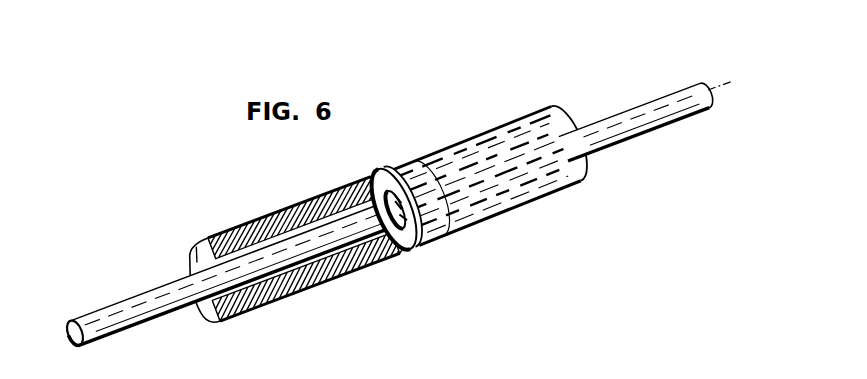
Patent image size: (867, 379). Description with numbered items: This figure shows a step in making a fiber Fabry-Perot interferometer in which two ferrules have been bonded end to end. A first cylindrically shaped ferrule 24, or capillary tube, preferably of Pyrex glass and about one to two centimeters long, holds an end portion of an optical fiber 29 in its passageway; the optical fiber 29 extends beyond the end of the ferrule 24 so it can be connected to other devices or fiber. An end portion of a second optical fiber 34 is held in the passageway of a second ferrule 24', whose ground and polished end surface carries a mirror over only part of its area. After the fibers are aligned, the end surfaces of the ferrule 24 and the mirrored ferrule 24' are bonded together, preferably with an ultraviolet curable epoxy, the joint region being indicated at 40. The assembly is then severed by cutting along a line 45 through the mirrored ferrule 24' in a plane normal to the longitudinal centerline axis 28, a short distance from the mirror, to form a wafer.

The ferrule 24 is at (294, 257).
The second ferrule 24' is at (493, 177).
The longitudinal axis 28 is at (722, 80).
The optical fiber 29 is at (126, 312).
The optical fiber 34 is at (648, 128).
The retaining ring 40 is at (390, 238).
The line 45 is at (460, 207).